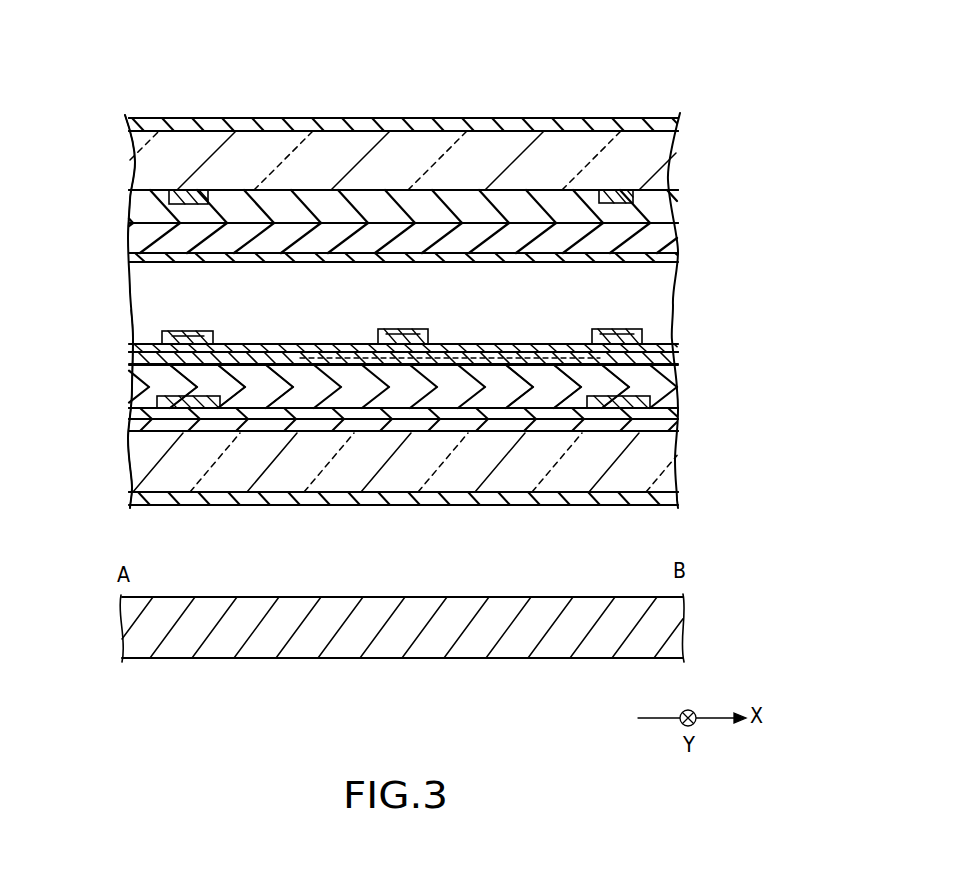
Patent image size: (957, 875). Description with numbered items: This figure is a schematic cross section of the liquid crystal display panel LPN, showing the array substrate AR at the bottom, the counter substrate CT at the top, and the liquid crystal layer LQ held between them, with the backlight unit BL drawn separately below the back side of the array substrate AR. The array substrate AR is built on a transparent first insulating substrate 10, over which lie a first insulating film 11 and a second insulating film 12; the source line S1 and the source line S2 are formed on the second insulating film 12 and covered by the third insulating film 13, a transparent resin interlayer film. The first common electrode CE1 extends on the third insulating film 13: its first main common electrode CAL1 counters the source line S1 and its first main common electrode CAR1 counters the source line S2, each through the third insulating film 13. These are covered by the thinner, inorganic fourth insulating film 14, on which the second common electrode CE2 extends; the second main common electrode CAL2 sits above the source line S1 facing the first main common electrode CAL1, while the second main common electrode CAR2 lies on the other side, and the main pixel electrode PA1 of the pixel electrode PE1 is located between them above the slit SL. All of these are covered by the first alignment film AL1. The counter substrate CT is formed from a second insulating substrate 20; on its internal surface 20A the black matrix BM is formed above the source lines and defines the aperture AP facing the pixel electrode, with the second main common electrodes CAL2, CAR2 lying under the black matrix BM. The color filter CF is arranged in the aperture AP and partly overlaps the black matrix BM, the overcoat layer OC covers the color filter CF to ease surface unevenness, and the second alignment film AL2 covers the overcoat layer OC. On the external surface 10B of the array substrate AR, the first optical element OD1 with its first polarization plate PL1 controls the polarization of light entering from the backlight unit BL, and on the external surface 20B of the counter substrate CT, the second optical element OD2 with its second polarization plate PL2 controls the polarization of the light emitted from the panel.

The external surface of the counter substrate 20B is at (163, 119).
The second optical element OD2 is at (461, 123).
The second polarization plate PL2 is at (680, 123).
The second insulating substrate 20 is at (676, 152).
The aperture AP is at (599, 203).
The liquid crystal display panel LPN is at (696, 99).
The counter substrate CT is at (118, 157).
The internal surface of the second insulating substrate 20A is at (132, 203).
The black matrix BM is at (648, 200).
The color filter CF is at (679, 212).
The overcoat layer OC is at (679, 241).
The second alignment film AL2 is at (678, 258).
The liquid crystal layer LQ is at (677, 306).
The second main common electrode CAL2 is at (109, 325).
The second common electrode CE2 is at (173, 337).
The slit SL is at (343, 343).
The first pixel electrode portion (PE1) PA1 is at (413, 313).
The first pixel electrode PE1 is at (411, 307).
The second main common electrode CAR2 is at (604, 330).
The first alignment film AL1 is at (678, 347).
The fourth insulating film 14 is at (678, 357).
The third insulating film 13 is at (678, 387).
The second insulating film 12 is at (678, 414).
The first insulating film 11 is at (678, 427).
The first insulating substrate 10 is at (678, 463).
The first optical element OD1 is at (461, 497).
The first polarization plate PL1 is at (679, 499).
The array substrate AR is at (117, 460).
The external surface of the array substrate 10B is at (144, 511).
The source line S1 is at (178, 408).
The first main common electrode CAL1 is at (231, 469).
The first common electrode CE1 is at (248, 366).
The first main common electrode CAR1 is at (562, 366).
The source line S2 is at (616, 408).
The backlight unit BL is at (683, 637).